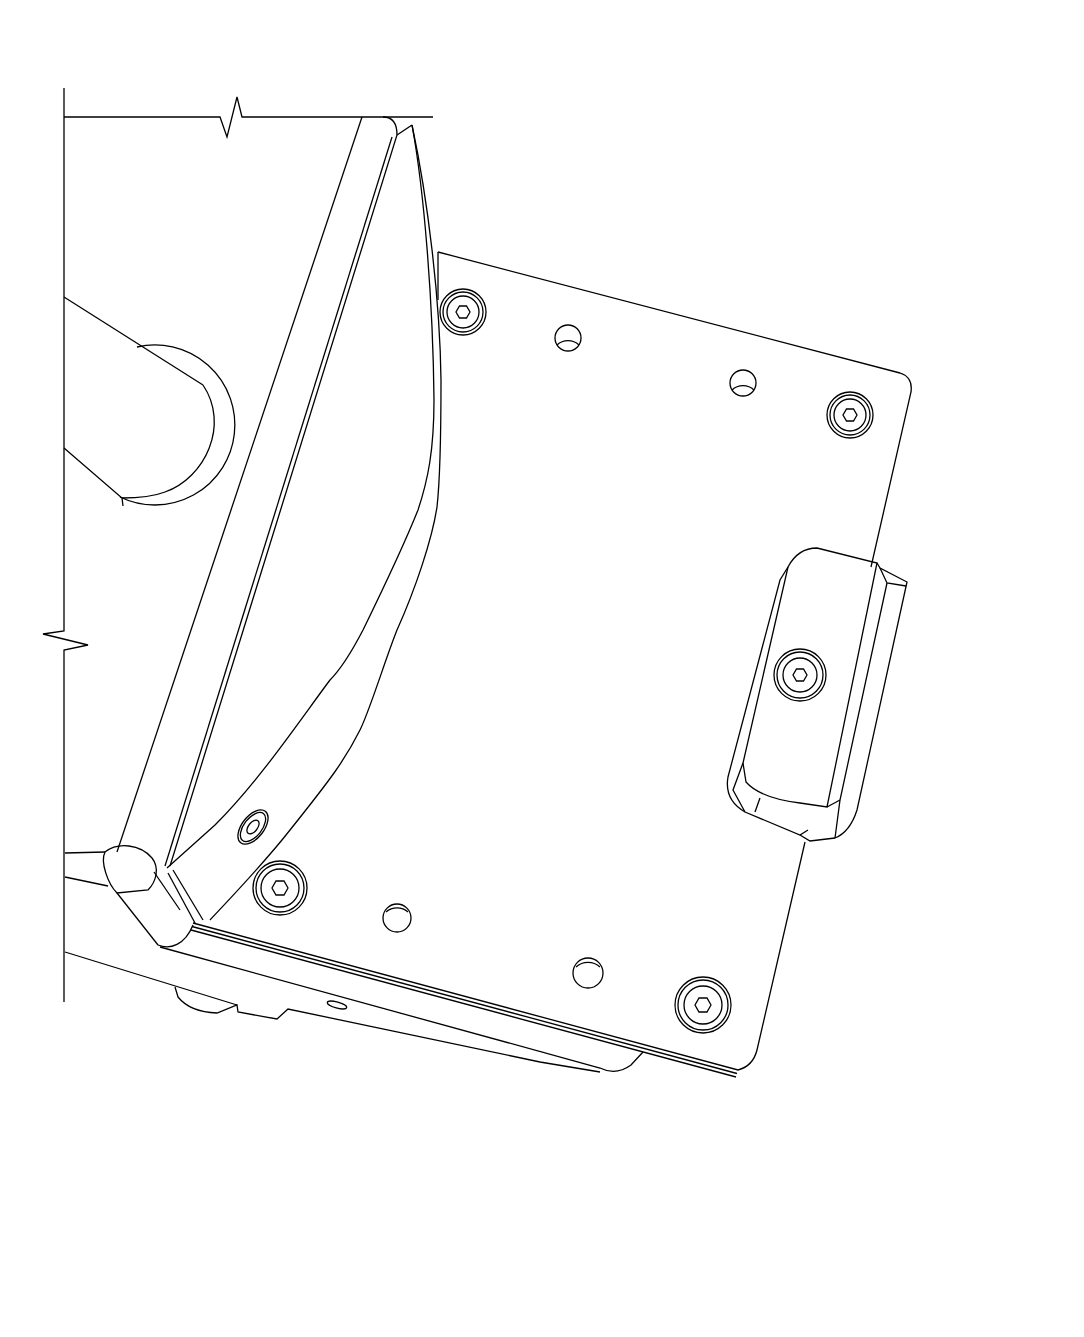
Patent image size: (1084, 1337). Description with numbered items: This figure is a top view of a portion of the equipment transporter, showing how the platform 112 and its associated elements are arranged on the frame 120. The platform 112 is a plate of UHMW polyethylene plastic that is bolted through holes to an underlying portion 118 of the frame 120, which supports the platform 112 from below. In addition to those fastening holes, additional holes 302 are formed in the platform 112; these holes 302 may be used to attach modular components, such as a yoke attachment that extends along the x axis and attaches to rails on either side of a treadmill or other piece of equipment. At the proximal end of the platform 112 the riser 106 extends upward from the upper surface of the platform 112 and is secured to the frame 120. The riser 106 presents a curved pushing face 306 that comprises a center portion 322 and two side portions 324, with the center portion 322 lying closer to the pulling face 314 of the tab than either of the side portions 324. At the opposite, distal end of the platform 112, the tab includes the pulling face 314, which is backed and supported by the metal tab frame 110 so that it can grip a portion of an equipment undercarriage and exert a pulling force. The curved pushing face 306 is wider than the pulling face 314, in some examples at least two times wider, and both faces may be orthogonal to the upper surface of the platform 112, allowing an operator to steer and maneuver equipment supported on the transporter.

The frame 120 is at (195, 157).
The riser 106 is at (368, 435).
The curved pushing face 306 is at (424, 506).
The center portion 322 is at (418, 552).
The side portions 324 is at (456, 221).
The holes 302 is at (572, 358).
The pulling face 314 is at (755, 626).
The metal tab frame 110 is at (875, 784).
The platform 112 is at (788, 963).
The portion of the frame 118 is at (378, 1026).